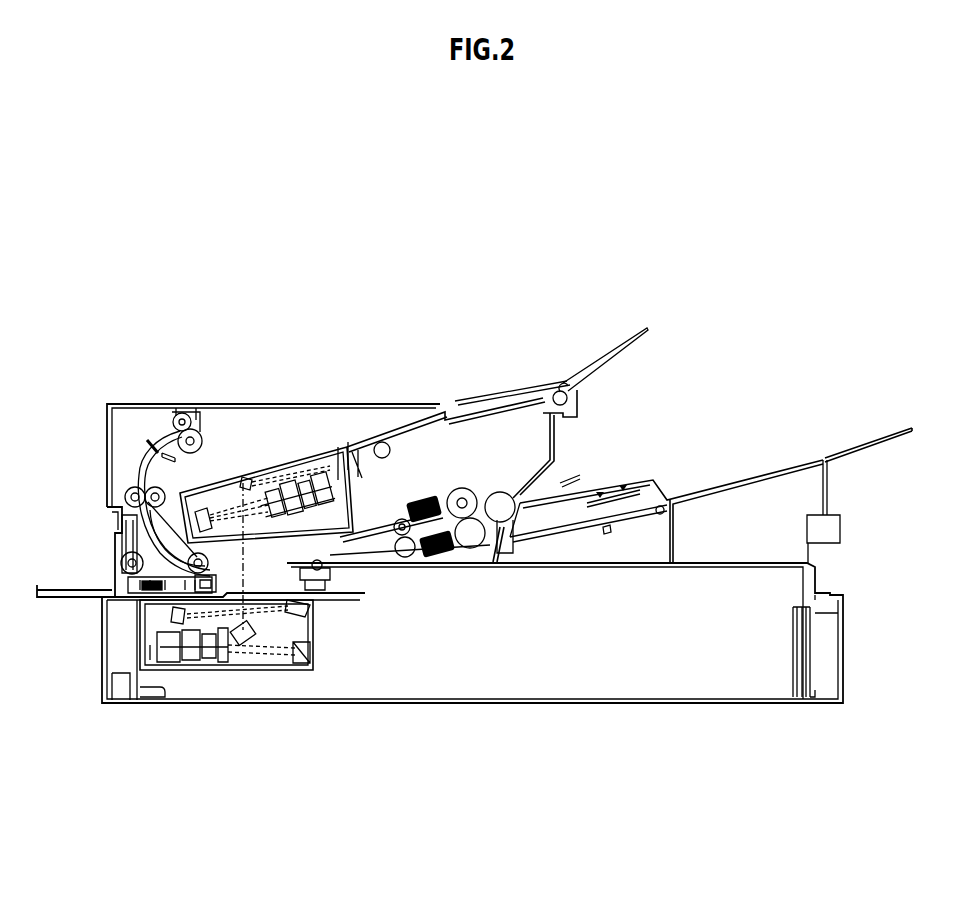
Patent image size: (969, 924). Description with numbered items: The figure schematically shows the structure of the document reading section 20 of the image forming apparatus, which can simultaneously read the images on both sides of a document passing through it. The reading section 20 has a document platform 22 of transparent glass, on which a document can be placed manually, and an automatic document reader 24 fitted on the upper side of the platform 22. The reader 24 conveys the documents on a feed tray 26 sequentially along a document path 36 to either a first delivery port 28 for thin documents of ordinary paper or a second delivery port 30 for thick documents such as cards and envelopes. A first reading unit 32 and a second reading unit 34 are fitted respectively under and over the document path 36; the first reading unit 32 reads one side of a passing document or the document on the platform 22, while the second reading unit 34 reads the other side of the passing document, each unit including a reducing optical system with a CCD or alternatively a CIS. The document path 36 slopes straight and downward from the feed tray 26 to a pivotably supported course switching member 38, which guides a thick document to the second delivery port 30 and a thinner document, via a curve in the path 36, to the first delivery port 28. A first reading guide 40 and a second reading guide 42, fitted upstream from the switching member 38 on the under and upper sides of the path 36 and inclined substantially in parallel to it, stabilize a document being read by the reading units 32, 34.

The document reading section 20 is at (655, 388).
The document platform 22 is at (593, 562).
The automatic document reader 24 is at (140, 397).
The feed tray 26 is at (672, 483).
The first delivery port 28 is at (333, 433).
The second delivery port 30 is at (79, 588).
The first reading unit 32 is at (318, 655).
The second reading unit 34 is at (217, 491).
The document path 36 is at (383, 545).
The course switching member 38 is at (203, 580).
The first reading guide 40 is at (297, 573).
The second reading guide 42 is at (131, 485).